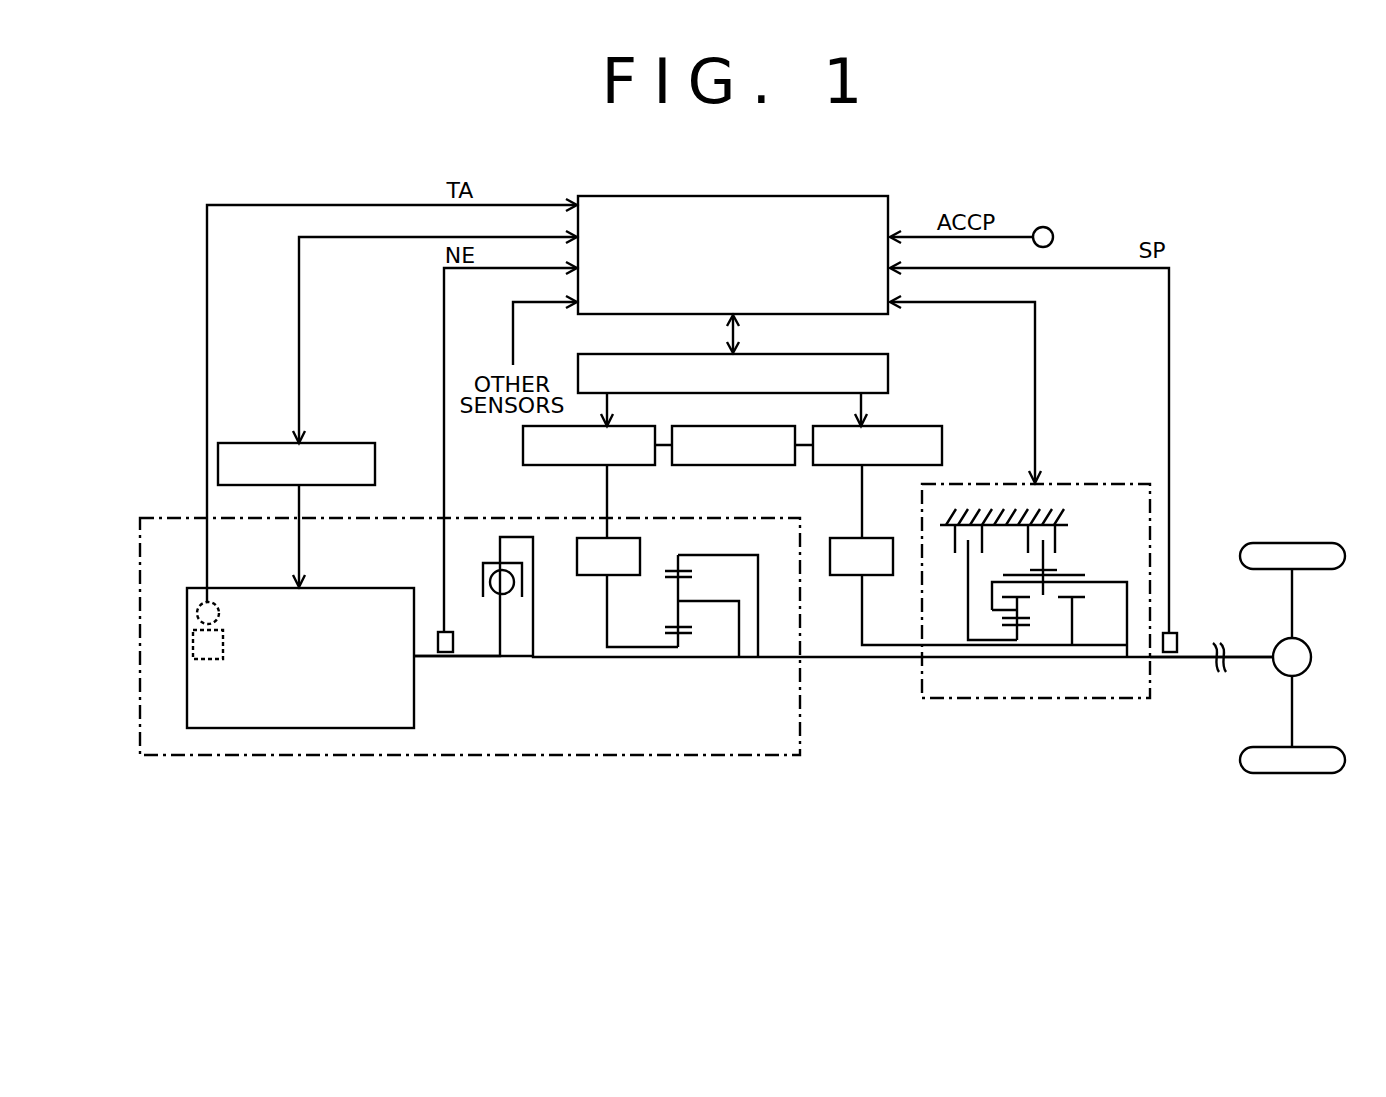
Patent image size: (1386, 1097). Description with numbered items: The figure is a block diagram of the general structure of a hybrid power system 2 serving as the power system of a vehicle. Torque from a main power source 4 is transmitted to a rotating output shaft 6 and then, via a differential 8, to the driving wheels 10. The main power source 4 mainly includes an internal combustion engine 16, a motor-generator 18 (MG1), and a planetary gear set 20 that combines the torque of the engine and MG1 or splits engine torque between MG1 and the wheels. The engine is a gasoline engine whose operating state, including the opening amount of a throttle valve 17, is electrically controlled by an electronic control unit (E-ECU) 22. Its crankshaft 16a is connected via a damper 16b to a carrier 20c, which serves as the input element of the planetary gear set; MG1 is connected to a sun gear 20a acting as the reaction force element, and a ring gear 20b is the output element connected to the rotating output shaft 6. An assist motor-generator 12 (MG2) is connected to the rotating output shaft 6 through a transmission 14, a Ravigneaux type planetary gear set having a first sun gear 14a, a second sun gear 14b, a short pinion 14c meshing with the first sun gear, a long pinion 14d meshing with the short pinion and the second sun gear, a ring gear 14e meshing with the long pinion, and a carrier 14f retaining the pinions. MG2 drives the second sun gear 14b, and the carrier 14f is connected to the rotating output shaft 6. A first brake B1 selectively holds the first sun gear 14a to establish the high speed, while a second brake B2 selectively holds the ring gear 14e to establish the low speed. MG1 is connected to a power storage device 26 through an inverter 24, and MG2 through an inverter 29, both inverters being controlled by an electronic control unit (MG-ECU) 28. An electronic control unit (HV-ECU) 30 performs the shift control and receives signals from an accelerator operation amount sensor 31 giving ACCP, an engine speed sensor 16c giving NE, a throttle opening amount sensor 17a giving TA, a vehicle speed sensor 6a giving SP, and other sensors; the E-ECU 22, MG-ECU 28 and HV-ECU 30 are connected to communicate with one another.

The hybrid power system 2 is at (847, 750).
The main power source 4 is at (729, 757).
The rotating output shaft 6 is at (1193, 660).
The vehicle speed sensor 6a is at (1175, 630).
The differential 8 is at (1312, 657).
The driving wheels 10 is at (1290, 543).
The motor-generator (MG2) 12 is at (843, 577).
The transmission 14 is at (1042, 636).
The first sun gear 14a is at (1020, 633).
The second sun gear 14b is at (1075, 600).
The short pinion 14c is at (1043, 612).
The long pinion 14d is at (1003, 576).
The ring gear 14e is at (1050, 566).
The carrier 14f is at (1105, 583).
The internal combustion engine 16 is at (373, 588).
The crankshaft 16a is at (480, 660).
The damper 16b is at (484, 568).
The engine speed sensor 16c is at (453, 640).
The throttle valve 17 is at (188, 637).
The throttle opening amount sensor 17a is at (195, 598).
The motor-generator (MG1) 18 is at (600, 577).
The planetary gear set 20 is at (693, 629).
The sun gear 20a is at (690, 635).
The ring gear 20b is at (668, 571).
The carrier 20c is at (706, 600).
The electronic control unit (E-ECU) 22 is at (345, 443).
The inverter 24 is at (618, 468).
The power storage device 26 is at (717, 468).
The electronic control unit (MG-ECU) 28 is at (888, 373).
The inverter 29 is at (900, 425).
The electronic control unit (HV-ECU) 30 is at (888, 210).
The accelerator operation amount sensor 31 is at (1041, 226).
The first brake B1 is at (955, 545).
The second brake B2 is at (1060, 542).